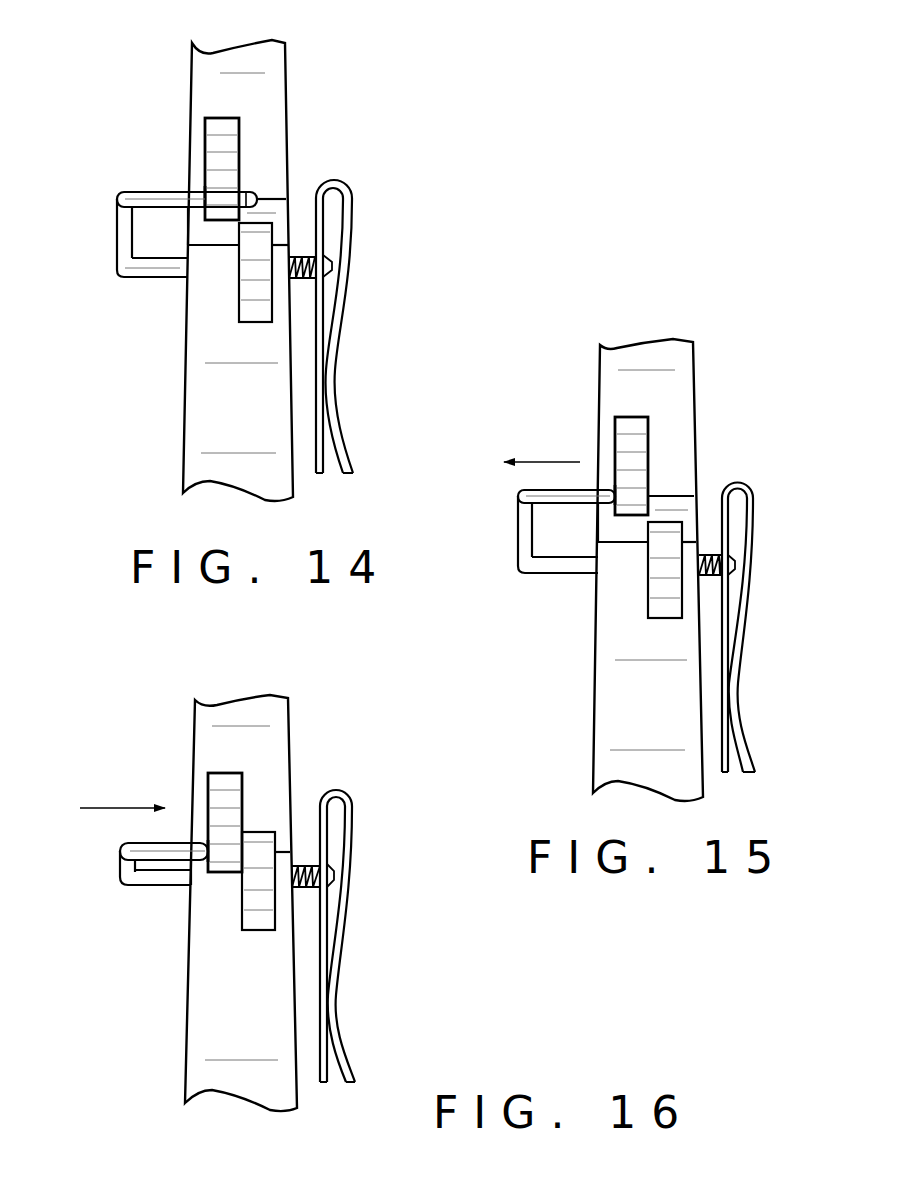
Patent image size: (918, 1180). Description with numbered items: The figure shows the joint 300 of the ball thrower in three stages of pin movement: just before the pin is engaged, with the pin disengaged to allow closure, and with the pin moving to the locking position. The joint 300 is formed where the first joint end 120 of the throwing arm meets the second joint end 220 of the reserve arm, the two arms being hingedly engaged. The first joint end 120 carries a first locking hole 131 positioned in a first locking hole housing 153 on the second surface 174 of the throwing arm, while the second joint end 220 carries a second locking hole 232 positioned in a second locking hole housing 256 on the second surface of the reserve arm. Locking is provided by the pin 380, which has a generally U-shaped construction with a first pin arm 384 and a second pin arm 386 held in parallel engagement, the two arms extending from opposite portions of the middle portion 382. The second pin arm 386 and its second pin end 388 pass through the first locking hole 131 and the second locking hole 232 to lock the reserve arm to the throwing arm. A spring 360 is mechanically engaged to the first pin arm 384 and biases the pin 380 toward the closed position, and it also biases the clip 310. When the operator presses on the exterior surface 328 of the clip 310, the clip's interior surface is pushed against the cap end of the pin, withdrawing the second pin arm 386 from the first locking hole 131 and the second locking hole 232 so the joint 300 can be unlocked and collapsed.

In FIG. 14, the first joint end 120 is at (272, 152).
In FIG. 15, the first joint end 120 is at (677, 458).
In FIG. 16, the first joint end 120 is at (270, 768).
In FIG. 14, the first locking hole 131 is at (203, 187).
In FIG. 15, the first locking hole 131 is at (613, 487).
In FIG. 16, the first locking hole 131 is at (208, 840).
In FIG. 14, the first locking hole housing 153 is at (220, 130).
In FIG. 15, the first locking hole housing 153 is at (630, 433).
In FIG. 16, the first locking hole housing 153 is at (227, 793).
In FIG. 14, the second surface 174 is at (248, 95).
In FIG. 14, the second joint end 220 is at (218, 267).
In FIG. 15, the second joint end 220 is at (627, 617).
In FIG. 16, the second joint end 220 is at (217, 942).
In FIG. 14, the second locking hole 232 is at (235, 242).
In FIG. 15, the second locking hole 232 is at (647, 528).
In FIG. 16, the second locking hole 232 is at (258, 857).
In FIG. 14, the second locking hole housing 256 is at (248, 303).
In FIG. 15, the second locking hole housing 256 is at (672, 602).
In FIG. 16, the second locking hole housing 256 is at (258, 902).
In FIG. 14, the joint 300 is at (324, 100).
In FIG. 15, the joint 300 is at (742, 403).
In FIG. 16, the joint 300 is at (136, 772).
In FIG. 14, the clip 310 is at (372, 265).
In FIG. 15, the clip 310 is at (785, 545).
In FIG. 16, the clip 310 is at (369, 872).
In FIG. 14, the exterior surface 328 is at (352, 217).
In FIG. 15, the exterior surface 328 is at (753, 518).
In FIG. 16, the exterior surface 328 is at (353, 835).
In FIG. 14, the spring 360 is at (297, 280).
In FIG. 15, the spring 360 is at (707, 578).
In FIG. 16, the spring 360 is at (305, 888).
In FIG. 14, the pin 380 is at (223, 220).
In FIG. 15, the pin 380 is at (525, 528).
In FIG. 16, the pin 380 is at (125, 881).
In FIG. 14, the middle portion 382 is at (117, 220).
In FIG. 15, the middle portion 382 is at (518, 532).
In FIG. 16, the middle portion 382 is at (132, 862).
In FIG. 14, the first pin arm 384 is at (160, 277).
In FIG. 15, the first pin arm 384 is at (573, 575).
In FIG. 16, the first pin arm 384 is at (170, 885).
In FIG. 14, the second pin arm 386 is at (165, 195).
In FIG. 15, the second pin arm 386 is at (550, 487).
In FIG. 16, the second pin arm 386 is at (150, 845).
In FIG. 14, the second pin end 388 is at (257, 193).